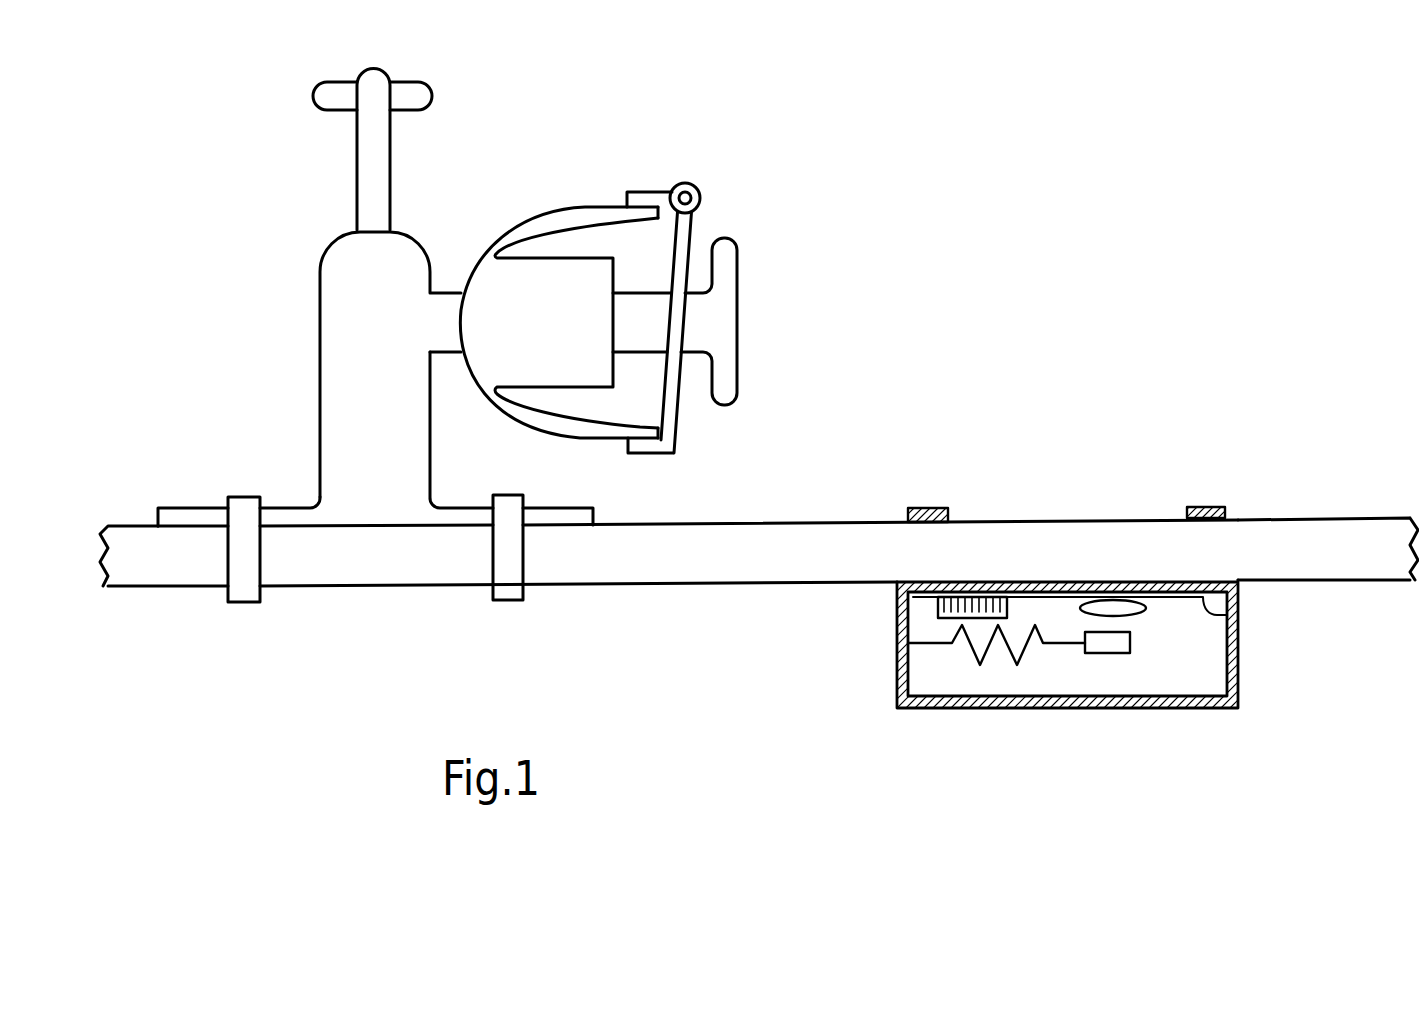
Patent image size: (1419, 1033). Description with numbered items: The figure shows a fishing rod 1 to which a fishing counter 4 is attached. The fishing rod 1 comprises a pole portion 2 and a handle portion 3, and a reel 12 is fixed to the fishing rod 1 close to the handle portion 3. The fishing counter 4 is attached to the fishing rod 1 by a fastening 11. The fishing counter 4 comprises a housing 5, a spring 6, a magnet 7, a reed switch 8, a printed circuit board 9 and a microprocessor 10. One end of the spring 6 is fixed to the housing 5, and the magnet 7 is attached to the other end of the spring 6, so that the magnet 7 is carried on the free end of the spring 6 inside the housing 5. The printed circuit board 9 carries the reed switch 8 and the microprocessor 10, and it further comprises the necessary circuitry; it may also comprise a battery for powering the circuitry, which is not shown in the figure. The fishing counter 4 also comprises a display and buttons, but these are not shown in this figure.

The fishing rod 1 is at (808, 530).
The pole portion 2 is at (1368, 563).
The handle portion 3 is at (133, 530).
The fishing counter 4 is at (920, 673).
The housing 5 is at (937, 708).
The spring 6 is at (1017, 660).
The magnet 7 is at (1107, 653).
The reed switch 8 is at (1113, 603).
The printed circuit board 9 is at (1227, 615).
The microprocessor 10 is at (978, 597).
The fastening 11 is at (927, 508).
The reel 12 is at (403, 257).